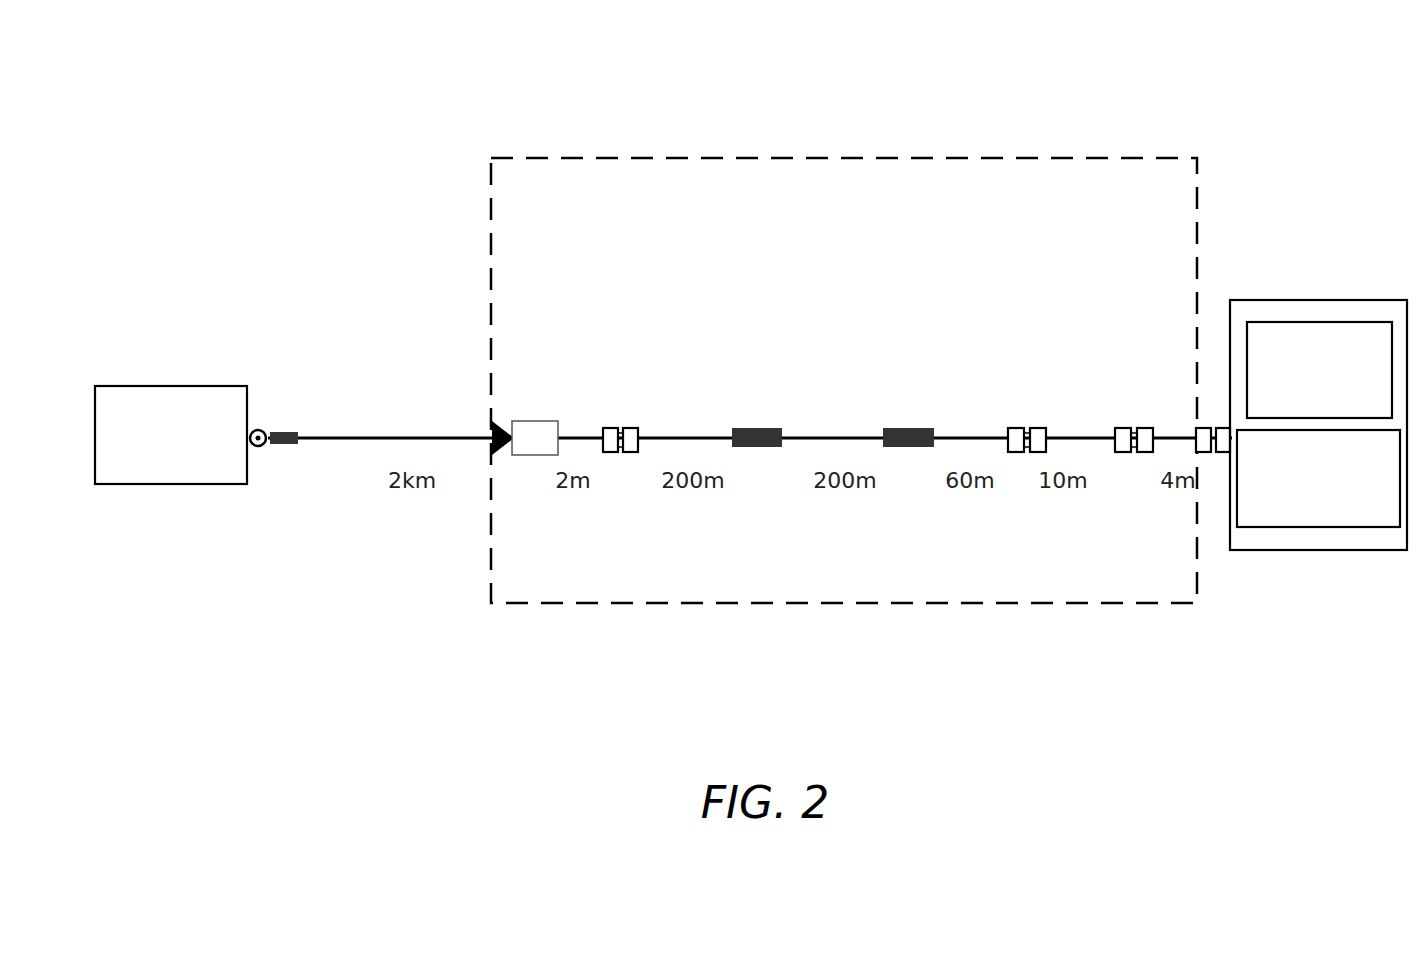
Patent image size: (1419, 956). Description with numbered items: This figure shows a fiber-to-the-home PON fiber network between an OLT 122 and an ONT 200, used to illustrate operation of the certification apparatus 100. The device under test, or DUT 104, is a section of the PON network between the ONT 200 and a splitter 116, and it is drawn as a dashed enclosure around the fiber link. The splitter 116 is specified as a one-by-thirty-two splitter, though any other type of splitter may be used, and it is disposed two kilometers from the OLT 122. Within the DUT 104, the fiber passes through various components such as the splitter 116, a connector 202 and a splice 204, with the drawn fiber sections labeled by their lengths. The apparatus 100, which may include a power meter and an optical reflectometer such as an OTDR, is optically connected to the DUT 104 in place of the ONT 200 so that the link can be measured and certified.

The DUT 104 is at (692, 146).
The OLT 122 is at (210, 375).
The splitter 116 is at (495, 414).
The connector 202 is at (626, 415).
The splice 204 is at (744, 413).
The ONT 200 is at (1319, 370).
The apparatus 100 is at (1318, 478).